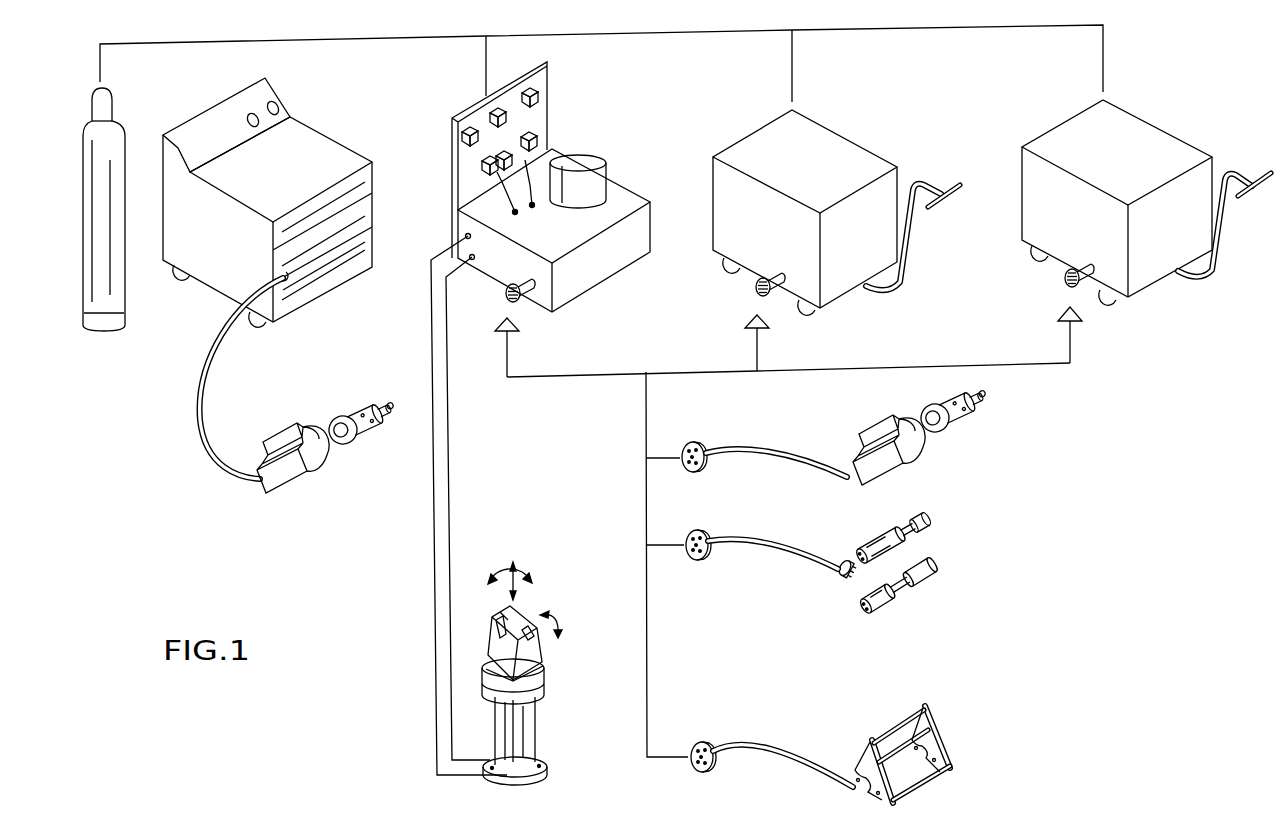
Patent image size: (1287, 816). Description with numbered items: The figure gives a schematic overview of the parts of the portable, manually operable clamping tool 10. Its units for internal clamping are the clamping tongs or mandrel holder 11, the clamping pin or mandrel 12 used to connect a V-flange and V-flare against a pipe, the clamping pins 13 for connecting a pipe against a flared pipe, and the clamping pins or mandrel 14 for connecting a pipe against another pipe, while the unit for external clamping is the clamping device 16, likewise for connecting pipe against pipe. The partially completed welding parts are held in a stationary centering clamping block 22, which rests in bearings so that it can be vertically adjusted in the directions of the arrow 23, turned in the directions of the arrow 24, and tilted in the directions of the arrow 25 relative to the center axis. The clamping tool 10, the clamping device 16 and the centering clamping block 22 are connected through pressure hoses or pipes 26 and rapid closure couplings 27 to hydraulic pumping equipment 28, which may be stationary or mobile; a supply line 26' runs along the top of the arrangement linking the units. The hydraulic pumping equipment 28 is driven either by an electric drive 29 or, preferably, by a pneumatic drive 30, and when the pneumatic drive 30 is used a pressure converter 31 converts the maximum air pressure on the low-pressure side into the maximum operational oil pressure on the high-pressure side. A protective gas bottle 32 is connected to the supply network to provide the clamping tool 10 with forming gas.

The clamping tool 10 is at (1047, 683).
The clamping tongs or mandrel holder 11 is at (290, 470).
The clamping pin or mandrel 12 is at (372, 426).
The clamping pins 13 is at (930, 540).
The clamping pins or mandrel 14 is at (930, 574).
The clamping device 16 is at (953, 762).
The centering clamping block 22 is at (535, 723).
The arrow 23 is at (520, 577).
The arrow 24 is at (533, 578).
The arrow 25 is at (560, 627).
The pressure hoses or pipes 26 is at (641, 511).
The bus line 26' is at (601, 63).
The rapid closure couplings 27 is at (527, 301).
The hydraulic pumping equipment 28 is at (307, 130).
The electric drive 29 is at (845, 273).
The pneumatic drive 30 is at (352, 268).
The pressure converter 31 is at (373, 230).
The protective gas bottle 32 is at (117, 268).